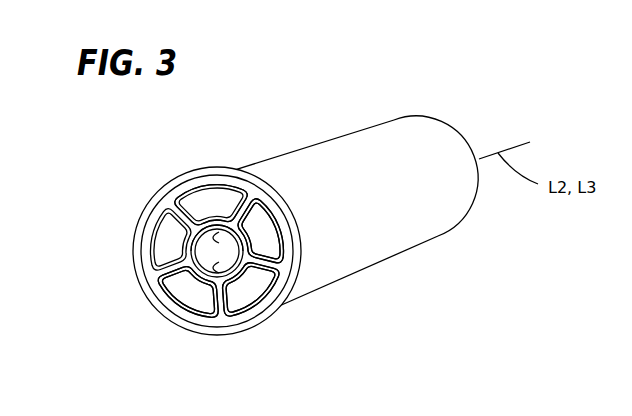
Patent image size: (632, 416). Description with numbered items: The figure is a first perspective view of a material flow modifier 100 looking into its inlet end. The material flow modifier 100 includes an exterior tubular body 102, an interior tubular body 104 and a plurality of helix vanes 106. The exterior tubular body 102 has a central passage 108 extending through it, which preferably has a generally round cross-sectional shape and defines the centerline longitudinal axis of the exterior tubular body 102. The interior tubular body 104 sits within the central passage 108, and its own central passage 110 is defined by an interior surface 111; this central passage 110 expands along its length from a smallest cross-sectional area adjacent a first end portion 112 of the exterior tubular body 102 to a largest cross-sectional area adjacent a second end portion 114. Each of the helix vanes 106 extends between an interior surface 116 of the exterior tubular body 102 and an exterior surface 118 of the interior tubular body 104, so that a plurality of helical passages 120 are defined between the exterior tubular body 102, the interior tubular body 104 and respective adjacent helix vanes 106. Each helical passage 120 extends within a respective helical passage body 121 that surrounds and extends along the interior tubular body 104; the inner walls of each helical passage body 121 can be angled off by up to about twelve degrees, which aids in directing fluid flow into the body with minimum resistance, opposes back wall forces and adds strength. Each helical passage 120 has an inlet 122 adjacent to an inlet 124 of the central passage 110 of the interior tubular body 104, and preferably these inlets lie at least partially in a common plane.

The material flow modifier 100 is at (315, 102).
The exterior tubular body 102 is at (397, 135).
The interior tubular body 104 is at (172, 227).
The helix vanes 106 is at (218, 233).
The central passage 108 is at (248, 298).
The central passage 110 is at (215, 252).
The interior surface 111 is at (217, 233).
The first end portion 112 is at (237, 222).
The second end portion 114 is at (456, 220).
The interior surface 116 is at (168, 193).
The exterior surface 118 is at (192, 300).
The helical passages 120 is at (176, 299).
The helical passage body 121 is at (253, 187).
The inlet 122 is at (253, 292).
The inlet 124 is at (208, 270).